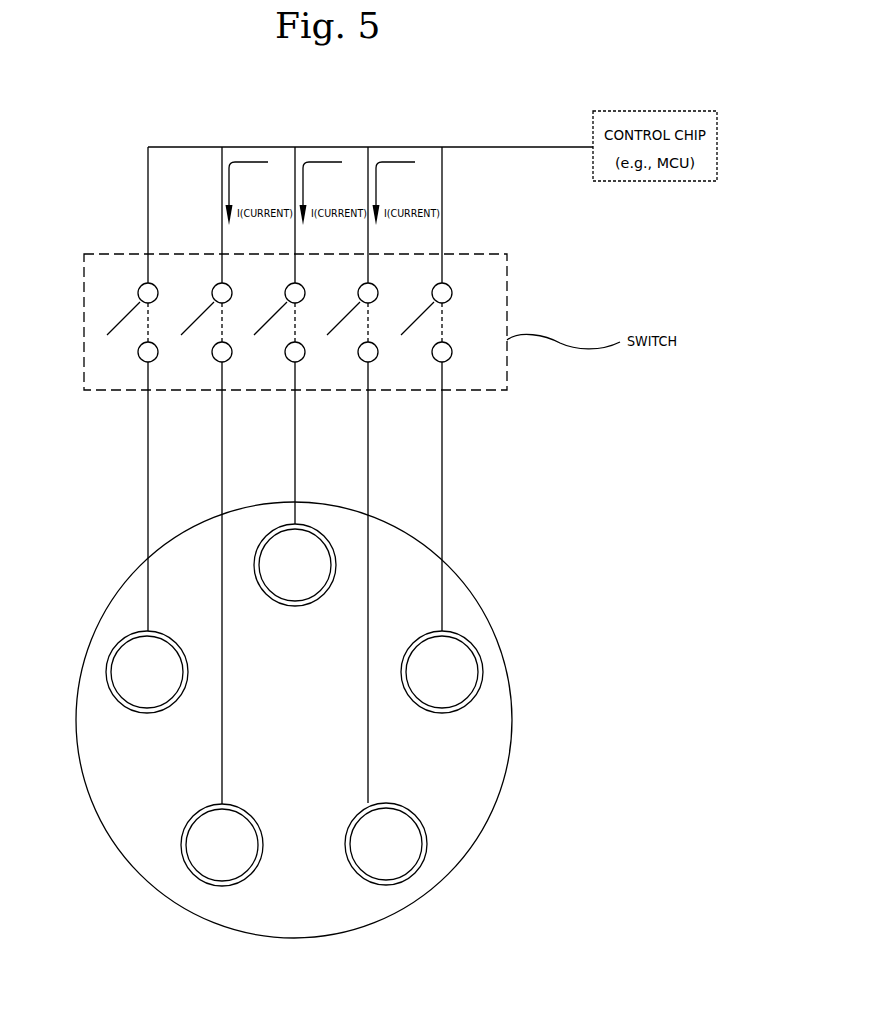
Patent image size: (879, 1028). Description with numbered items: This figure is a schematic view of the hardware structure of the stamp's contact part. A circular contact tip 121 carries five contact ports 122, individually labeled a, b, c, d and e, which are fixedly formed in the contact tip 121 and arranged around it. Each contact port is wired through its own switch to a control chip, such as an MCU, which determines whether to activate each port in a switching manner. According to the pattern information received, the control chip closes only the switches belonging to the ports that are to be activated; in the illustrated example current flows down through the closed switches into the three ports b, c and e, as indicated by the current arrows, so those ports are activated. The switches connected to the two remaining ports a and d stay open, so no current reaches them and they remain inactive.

The contact tip 121 is at (450, 872).
The contact ports 122 is at (364, 758).
The contact port a is at (120, 703).
The contact port b is at (207, 867).
The contact port c is at (365, 883).
The contact port d is at (465, 708).
The contact port e is at (298, 606).